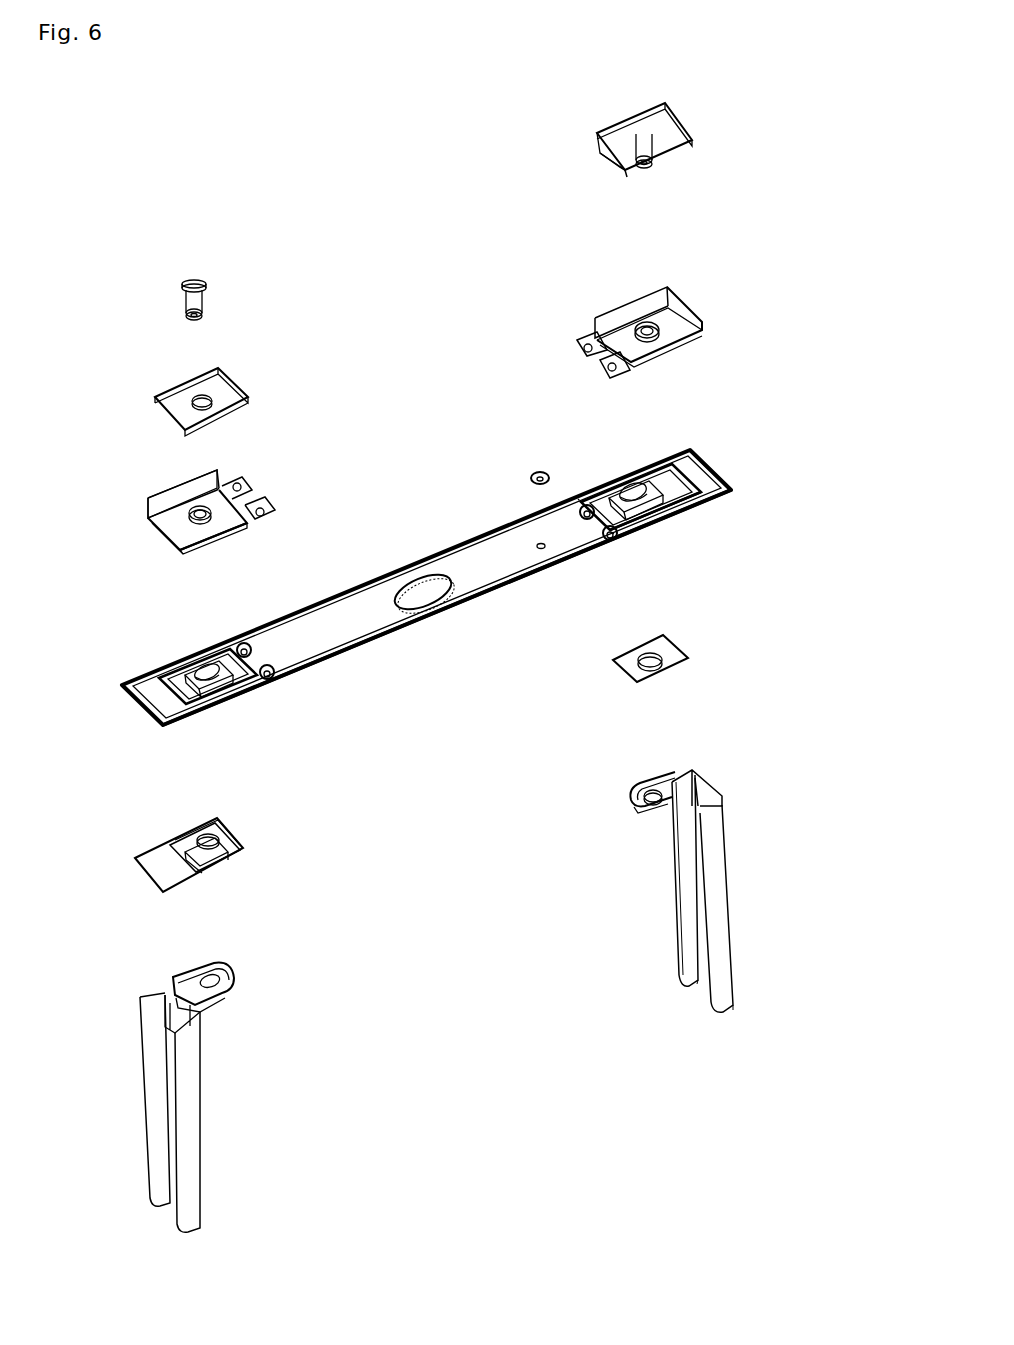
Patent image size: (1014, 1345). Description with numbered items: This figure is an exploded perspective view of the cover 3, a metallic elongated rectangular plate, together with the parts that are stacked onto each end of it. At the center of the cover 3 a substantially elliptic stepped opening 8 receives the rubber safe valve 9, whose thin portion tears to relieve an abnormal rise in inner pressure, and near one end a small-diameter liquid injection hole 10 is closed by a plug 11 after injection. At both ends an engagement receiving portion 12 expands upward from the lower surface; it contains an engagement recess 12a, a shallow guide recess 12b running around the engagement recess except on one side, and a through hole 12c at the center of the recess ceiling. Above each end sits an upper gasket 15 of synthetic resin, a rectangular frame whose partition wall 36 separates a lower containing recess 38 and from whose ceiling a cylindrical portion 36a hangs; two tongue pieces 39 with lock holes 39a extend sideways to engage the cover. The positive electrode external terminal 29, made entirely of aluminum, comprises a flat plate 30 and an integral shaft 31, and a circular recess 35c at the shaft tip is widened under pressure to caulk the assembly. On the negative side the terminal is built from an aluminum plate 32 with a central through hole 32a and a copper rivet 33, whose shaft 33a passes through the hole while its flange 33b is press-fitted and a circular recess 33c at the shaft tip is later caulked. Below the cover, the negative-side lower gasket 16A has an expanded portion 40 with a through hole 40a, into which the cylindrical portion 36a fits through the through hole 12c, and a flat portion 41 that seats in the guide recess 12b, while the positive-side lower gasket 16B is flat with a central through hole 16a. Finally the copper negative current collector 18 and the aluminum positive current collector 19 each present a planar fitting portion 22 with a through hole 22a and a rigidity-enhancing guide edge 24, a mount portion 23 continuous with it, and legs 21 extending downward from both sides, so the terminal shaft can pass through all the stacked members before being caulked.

The cover 3 is at (360, 625).
The opening 8 is at (440, 610).
The safe valve 9 is at (420, 590).
The liquid injection hole 10 is at (545, 552).
The plug 11 is at (535, 474).
The engagement receiving portion 12 is at (180, 672).
The engagement recess 12a is at (655, 517).
The guide recess 12b is at (700, 500).
The through hole 12c is at (635, 535).
The upper gasket 15 is at (388, 423).
The lower gasket on the negative electrode side 16A is at (208, 866).
The lower gasket on the positive electrode side 16B is at (721, 660).
The through hole 16a is at (680, 644).
The negative current collector 18 is at (205, 1102).
The positive current collector 19 is at (691, 912).
The legs 21 is at (730, 860).
The fitting portion 22 is at (627, 792).
The through hole 22a is at (655, 808).
The mount portion 23 is at (715, 800).
The guide edge 24 is at (638, 815).
The positive electrode external terminal 29 is at (600, 128).
The flat plate 30 is at (603, 148).
The shaft 31 is at (625, 160).
The aluminum plate 32 is at (175, 408).
The through hole 32a is at (206, 409).
The rivet 33 is at (212, 317).
The shaft 33a is at (205, 300).
The flange 33b is at (208, 282).
The circular recess 33c is at (200, 320).
The circular recess 35c is at (646, 168).
The partition wall 36 is at (165, 532).
The cylindrical portion 36a is at (228, 531).
The lower containing recess 38 is at (180, 548).
The tongue pieces 39 is at (286, 484).
The lock hole 39a is at (262, 500).
The expanded portion 40 is at (257, 862).
The through hole 40a is at (220, 860).
The flat portion 41 is at (160, 878).